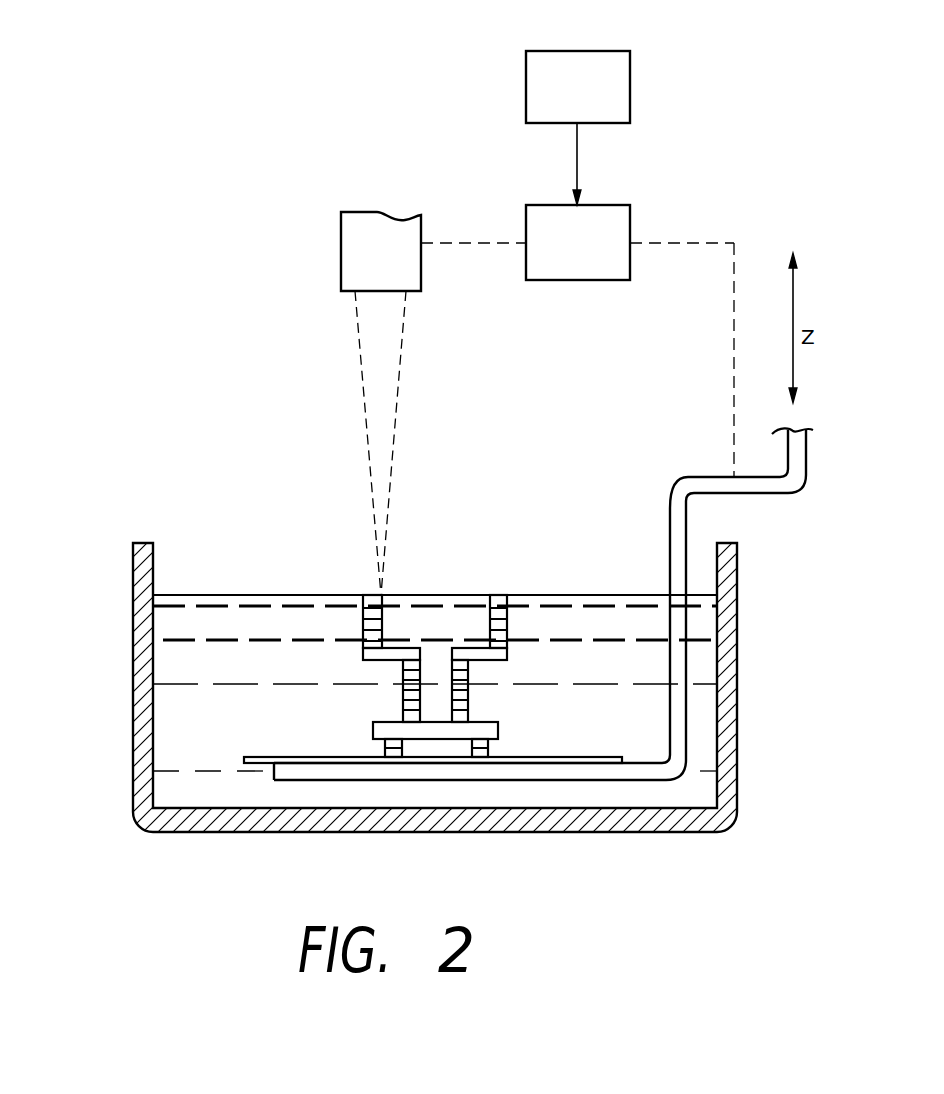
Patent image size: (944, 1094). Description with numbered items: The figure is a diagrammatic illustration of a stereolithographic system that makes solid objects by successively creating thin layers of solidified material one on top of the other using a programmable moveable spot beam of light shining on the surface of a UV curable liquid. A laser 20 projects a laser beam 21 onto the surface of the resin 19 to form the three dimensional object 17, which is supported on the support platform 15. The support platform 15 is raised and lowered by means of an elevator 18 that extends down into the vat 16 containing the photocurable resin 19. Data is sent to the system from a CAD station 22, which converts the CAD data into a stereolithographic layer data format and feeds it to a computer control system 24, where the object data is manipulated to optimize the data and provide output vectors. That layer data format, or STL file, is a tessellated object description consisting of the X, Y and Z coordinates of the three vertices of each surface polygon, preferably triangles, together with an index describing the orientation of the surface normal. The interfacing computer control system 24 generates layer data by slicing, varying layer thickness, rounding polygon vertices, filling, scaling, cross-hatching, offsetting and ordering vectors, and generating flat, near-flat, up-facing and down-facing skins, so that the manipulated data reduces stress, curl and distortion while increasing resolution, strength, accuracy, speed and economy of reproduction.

The support platform 15 is at (272, 758).
The vat 16 is at (737, 675).
The three dimensional object 17 is at (365, 620).
The elevator 18 is at (572, 782).
The resin 19 is at (558, 596).
The laser 20 is at (341, 250).
The laser beam 21 is at (366, 447).
The CAD station 22 is at (630, 87).
The computer control system 24 is at (630, 222).